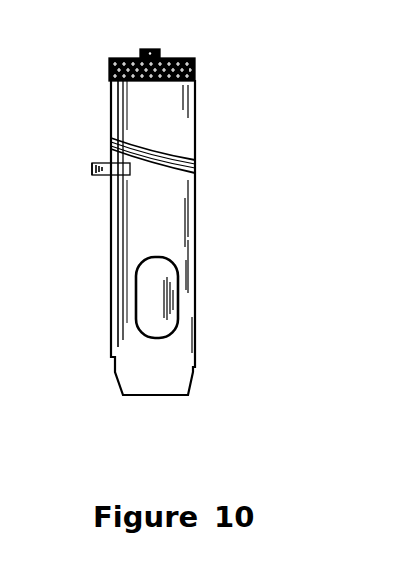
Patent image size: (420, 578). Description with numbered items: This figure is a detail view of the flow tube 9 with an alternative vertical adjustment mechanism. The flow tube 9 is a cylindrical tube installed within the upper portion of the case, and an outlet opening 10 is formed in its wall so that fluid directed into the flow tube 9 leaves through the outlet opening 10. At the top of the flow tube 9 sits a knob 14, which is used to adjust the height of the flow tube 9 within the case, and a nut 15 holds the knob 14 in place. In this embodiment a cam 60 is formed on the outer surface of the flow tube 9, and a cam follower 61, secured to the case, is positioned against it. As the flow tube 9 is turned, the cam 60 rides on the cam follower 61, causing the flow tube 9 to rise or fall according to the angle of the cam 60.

The flow tube 9 is at (102, 230).
The outlet opening 10 is at (150, 275).
The knob 14 is at (196, 62).
The nut 15 is at (143, 50).
The cam 60 is at (167, 152).
The cam follower 61 is at (92, 173).